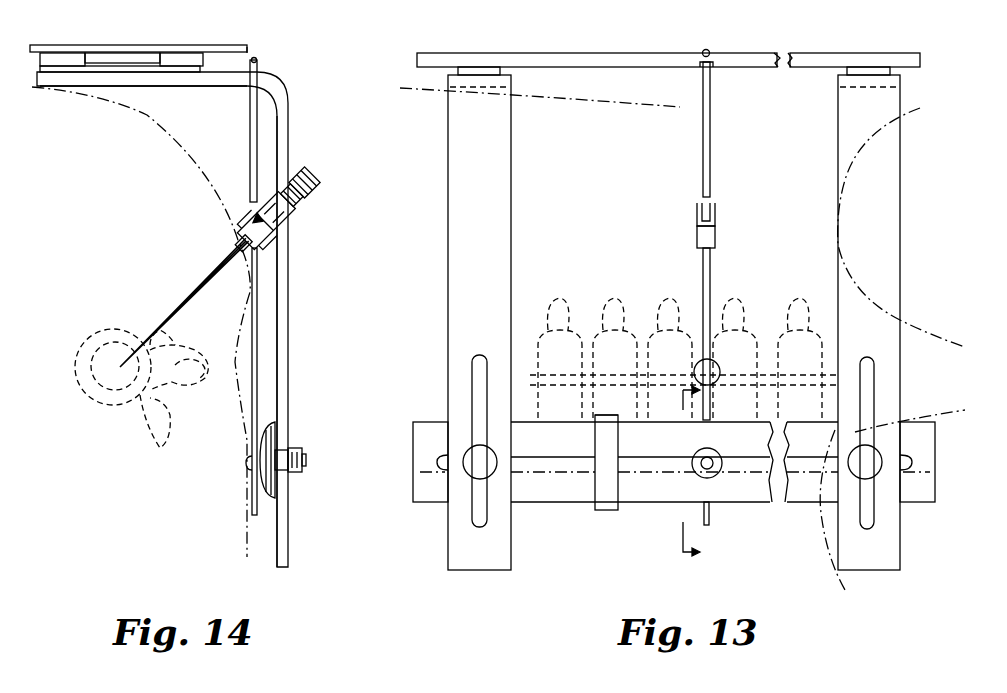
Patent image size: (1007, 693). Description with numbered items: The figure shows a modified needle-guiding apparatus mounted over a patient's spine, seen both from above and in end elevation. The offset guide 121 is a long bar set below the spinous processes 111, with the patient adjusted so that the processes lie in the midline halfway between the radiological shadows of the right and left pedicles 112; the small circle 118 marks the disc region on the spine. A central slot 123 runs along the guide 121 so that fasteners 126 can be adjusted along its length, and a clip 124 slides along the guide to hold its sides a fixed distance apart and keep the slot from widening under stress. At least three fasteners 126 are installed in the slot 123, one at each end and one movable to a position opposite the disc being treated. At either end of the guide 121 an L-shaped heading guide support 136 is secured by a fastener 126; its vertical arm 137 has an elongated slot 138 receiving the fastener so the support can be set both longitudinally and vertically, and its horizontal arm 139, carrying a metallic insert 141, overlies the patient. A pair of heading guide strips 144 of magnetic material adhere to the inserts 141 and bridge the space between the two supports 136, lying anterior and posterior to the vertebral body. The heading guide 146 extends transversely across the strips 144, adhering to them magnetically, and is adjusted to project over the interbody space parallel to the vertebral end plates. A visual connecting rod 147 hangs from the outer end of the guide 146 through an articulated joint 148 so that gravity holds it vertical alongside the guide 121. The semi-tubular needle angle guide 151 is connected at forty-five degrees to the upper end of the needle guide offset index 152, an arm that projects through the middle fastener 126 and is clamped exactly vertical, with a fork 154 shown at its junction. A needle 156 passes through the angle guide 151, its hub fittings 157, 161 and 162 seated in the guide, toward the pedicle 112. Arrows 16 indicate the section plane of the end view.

In FIG. 13, the section line 16 is at (677, 473).
In FIG. 14, the spinous processes 111 is at (217, 364).
In FIG. 13, the spinous processes 111 is at (584, 368).
In FIG. 14, the pedicles 112 is at (150, 322).
In FIG. 13, the target point 118 is at (702, 364).
In FIG. 14, the offset guide 121 is at (268, 483).
In FIG. 13, the offset guide 121 is at (528, 490).
In FIG. 13, the central slot 123 is at (560, 462).
In FIG. 13, the clip 124 is at (607, 496).
In FIG. 14, the fasteners 126 is at (312, 460).
In FIG. 13, the fasteners 126 is at (468, 474).
In FIG. 14, the heading guide support 136 is at (286, 80).
In FIG. 13, the heading guide support 136 is at (447, 229).
In FIG. 14, the vertical arm 137 is at (288, 150).
In FIG. 13, the vertical arm 137 is at (498, 204).
In FIG. 13, the elongated slot 138 is at (480, 382).
In FIG. 14, the horizontal arm 139 is at (139, 80).
In FIG. 14, the metallic insert 141 is at (97, 70).
In FIG. 13, the metallic insert 141 is at (480, 68).
In FIG. 14, the heading guide strips 144 is at (62, 57).
In FIG. 13, the heading guide strips 144 is at (581, 62).
In FIG. 14, the heading guide 146 is at (112, 52).
In FIG. 13, the heading guide 146 is at (716, 27).
In FIG. 14, the visual connecting rod 147 is at (250, 160).
In FIG. 13, the visual connecting rod 147 is at (703, 146).
In FIG. 14, the articulated joint 148 is at (258, 25).
In FIG. 13, the articulated joint 148 is at (715, 62).
In FIG. 14, the needle angle guide 151 is at (287, 249).
In FIG. 13, the needle angle guide 151 is at (697, 242).
In FIG. 14, the needle guide offset index 152 is at (258, 372).
In FIG. 13, the needle guide offset index 152 is at (703, 280).
In FIG. 13, the fork 154 is at (700, 218).
In FIG. 14, the needle 156 is at (210, 266).
In FIG. 14, the needle adapter 157 is at (292, 198).
In FIG. 14, the cap 161 is at (299, 178).
In FIG. 14, the lock sleeve 162 is at (284, 214).